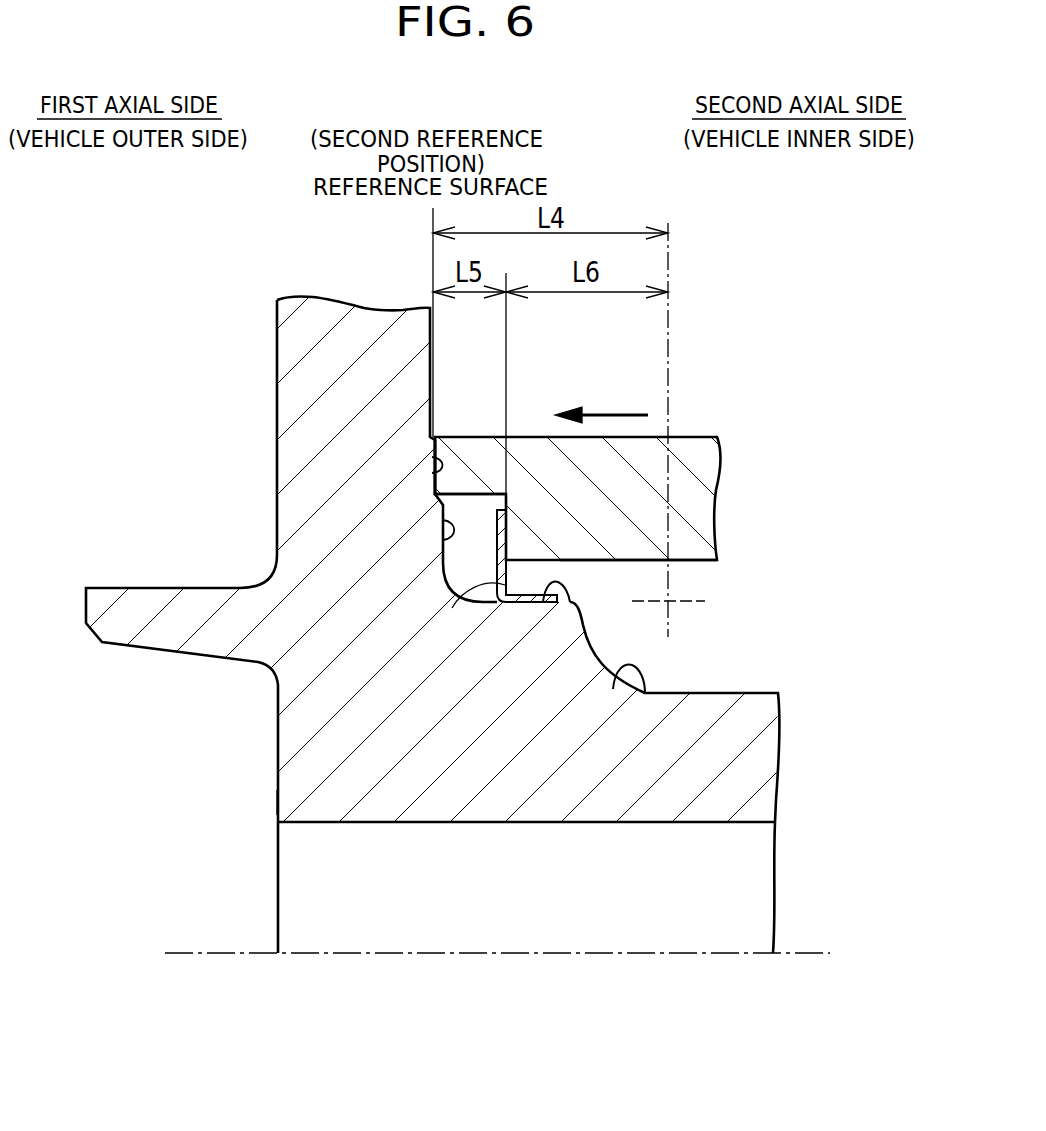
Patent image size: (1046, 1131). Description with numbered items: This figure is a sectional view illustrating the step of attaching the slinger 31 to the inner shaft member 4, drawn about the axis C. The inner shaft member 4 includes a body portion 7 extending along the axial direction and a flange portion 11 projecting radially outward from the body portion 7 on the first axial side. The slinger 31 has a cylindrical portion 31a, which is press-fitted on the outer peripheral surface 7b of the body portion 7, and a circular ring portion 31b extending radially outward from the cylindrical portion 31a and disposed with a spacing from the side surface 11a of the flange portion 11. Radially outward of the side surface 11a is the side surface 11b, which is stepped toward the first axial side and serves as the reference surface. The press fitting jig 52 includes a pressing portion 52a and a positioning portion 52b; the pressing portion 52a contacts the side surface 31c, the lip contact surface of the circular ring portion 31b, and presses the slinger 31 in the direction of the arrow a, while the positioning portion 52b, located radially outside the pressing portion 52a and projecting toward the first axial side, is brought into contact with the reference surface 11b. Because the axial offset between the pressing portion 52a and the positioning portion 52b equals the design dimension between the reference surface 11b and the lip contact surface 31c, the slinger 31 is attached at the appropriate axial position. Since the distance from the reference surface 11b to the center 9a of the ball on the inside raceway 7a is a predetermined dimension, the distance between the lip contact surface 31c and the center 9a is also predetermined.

The inner shaft member 4 is at (267, 802).
The body portion 7 is at (705, 800).
The inside raceway 7a is at (645, 693).
The outer peripheral surface 7b is at (568, 600).
The center of the ball 9a is at (668, 602).
The flange portion 11 is at (298, 385).
The side surface 11a is at (443, 544).
The side surface 11b is at (432, 482).
The slinger 31 is at (490, 553).
The cylindrical portion 31a is at (510, 600).
The circular ring portion 31b is at (452, 608).
The side surface 31c is at (508, 537).
The press fitting jig 52 is at (688, 433).
The pressing portion 52a is at (610, 560).
The positioning portion 52b is at (467, 452).
The axis C is at (192, 952).
The arrow a is at (610, 413).